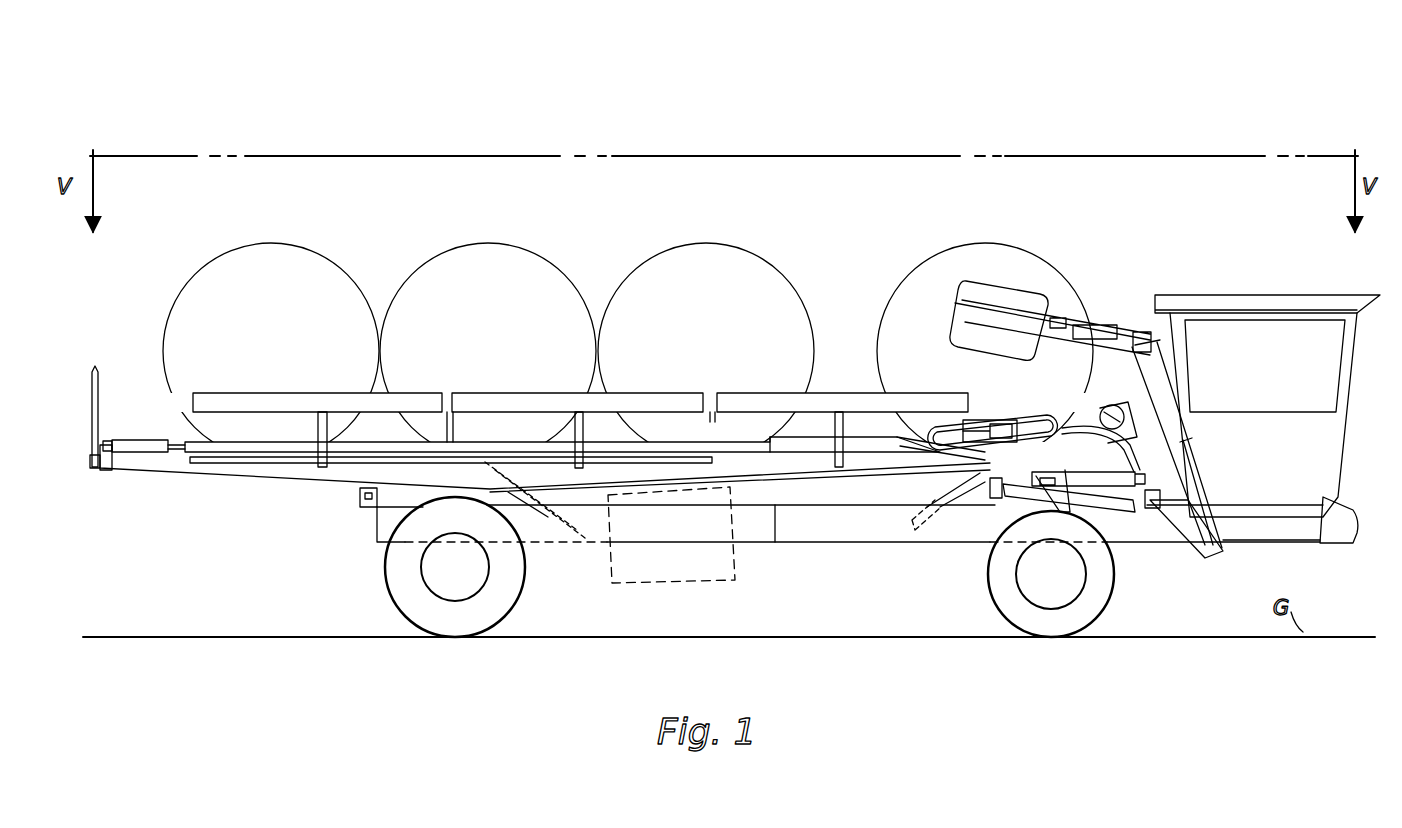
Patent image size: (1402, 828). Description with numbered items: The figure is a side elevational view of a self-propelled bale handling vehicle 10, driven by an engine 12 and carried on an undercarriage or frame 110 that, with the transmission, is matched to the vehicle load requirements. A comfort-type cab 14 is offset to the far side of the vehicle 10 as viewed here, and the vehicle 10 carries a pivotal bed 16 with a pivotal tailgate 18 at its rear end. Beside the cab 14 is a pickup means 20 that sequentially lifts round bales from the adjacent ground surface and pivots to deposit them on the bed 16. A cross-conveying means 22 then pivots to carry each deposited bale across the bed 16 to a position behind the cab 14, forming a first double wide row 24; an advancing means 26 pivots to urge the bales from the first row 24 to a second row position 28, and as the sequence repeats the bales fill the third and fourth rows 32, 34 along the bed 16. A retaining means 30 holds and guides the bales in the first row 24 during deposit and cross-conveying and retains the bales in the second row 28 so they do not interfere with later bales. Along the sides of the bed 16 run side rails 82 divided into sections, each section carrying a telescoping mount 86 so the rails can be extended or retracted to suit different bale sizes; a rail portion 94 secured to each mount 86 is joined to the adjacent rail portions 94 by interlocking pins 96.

The vehicle 10 is at (742, 102).
The engine 12 is at (678, 583).
The cab 14 is at (1256, 292).
The pivotal bed 16 is at (262, 490).
The pivotal tailgate 18 is at (100, 395).
The pickup means 20 is at (1098, 305).
The cross-conveying means 22 is at (994, 412).
The first row of bales 24 is at (957, 244).
The advancing means 26 is at (1126, 383).
The second row position 28 is at (697, 243).
The retaining means 30 is at (896, 435).
The third row 32 is at (477, 244).
The fourth row 34 is at (269, 243).
The side rail 82 is at (640, 389).
The telescoping mount 86 is at (582, 432).
The rail portion 94 is at (281, 392).
The interlocking pin 96 is at (723, 390).
The frame 110 is at (1147, 533).